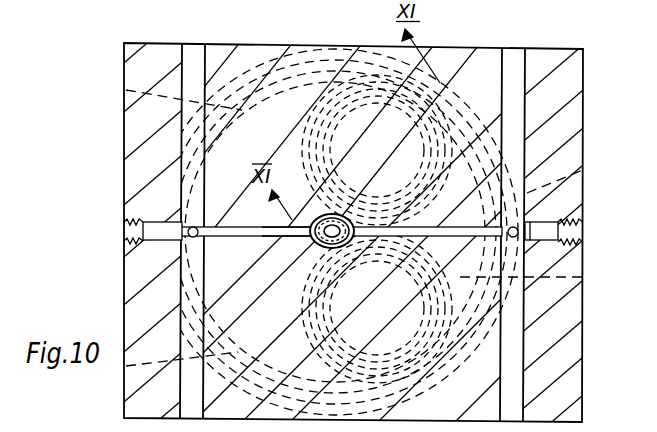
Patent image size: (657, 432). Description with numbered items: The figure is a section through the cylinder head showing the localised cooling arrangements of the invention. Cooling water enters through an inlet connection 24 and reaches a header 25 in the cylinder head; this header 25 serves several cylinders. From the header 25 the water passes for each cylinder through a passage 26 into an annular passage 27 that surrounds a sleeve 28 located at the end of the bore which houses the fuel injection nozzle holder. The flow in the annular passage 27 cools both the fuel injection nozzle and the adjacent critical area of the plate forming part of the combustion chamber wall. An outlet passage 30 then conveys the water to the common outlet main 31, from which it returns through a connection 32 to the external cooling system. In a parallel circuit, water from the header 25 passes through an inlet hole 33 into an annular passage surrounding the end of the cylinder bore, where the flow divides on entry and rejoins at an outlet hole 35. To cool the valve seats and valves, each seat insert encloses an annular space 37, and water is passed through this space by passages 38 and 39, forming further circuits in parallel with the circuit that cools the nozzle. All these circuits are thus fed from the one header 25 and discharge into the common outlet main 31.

The inlet connection 24 is at (122, 221).
The header 25 is at (193, 50).
The passage 26 is at (250, 236).
The annular passage 27 is at (350, 213).
The sleeve 28 is at (286, 240).
The outlet passage 30 is at (467, 165).
The common outlet main 31 is at (512, 57).
The connection 32 is at (581, 232).
The inlet hole 33 is at (188, 236).
The outlet hole 35 is at (518, 228).
The annular space 37 is at (353, 102).
The passage 38 is at (312, 58).
The passage 39 is at (580, 170).